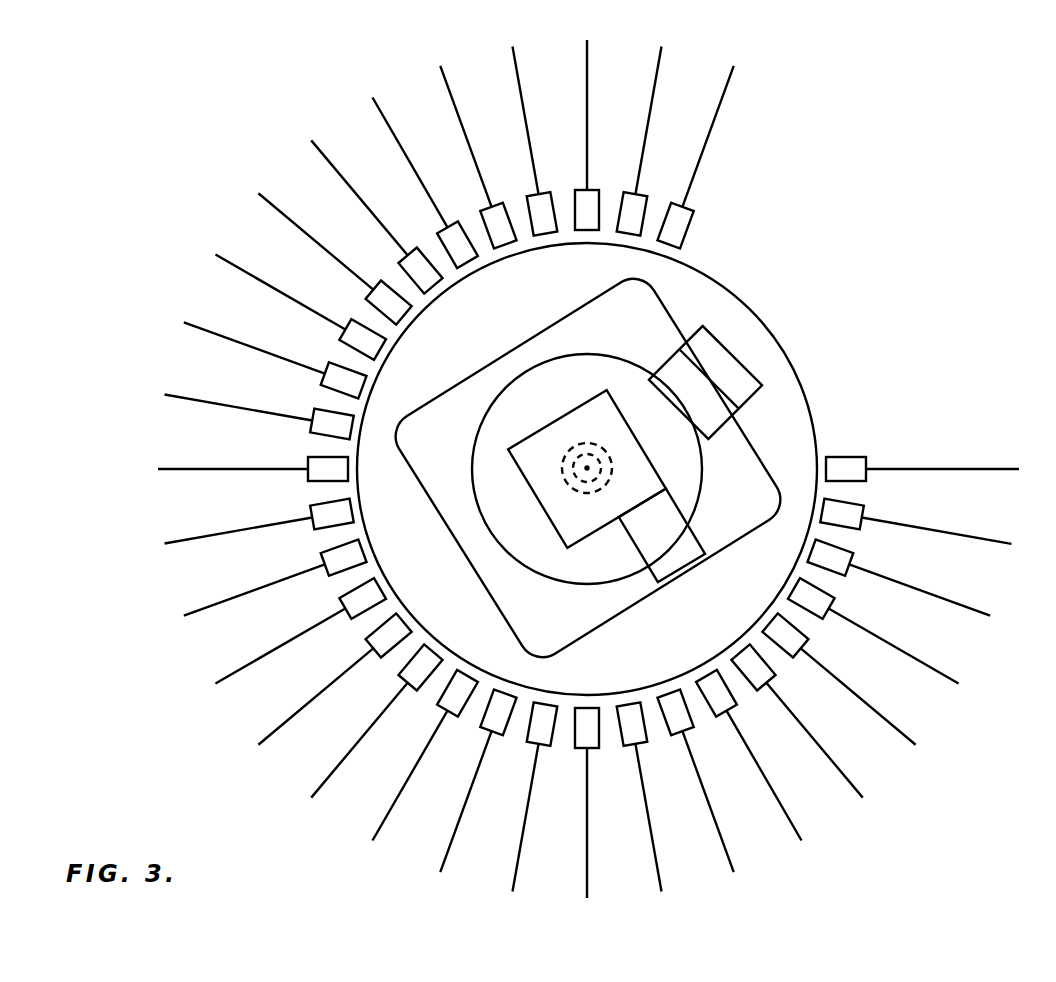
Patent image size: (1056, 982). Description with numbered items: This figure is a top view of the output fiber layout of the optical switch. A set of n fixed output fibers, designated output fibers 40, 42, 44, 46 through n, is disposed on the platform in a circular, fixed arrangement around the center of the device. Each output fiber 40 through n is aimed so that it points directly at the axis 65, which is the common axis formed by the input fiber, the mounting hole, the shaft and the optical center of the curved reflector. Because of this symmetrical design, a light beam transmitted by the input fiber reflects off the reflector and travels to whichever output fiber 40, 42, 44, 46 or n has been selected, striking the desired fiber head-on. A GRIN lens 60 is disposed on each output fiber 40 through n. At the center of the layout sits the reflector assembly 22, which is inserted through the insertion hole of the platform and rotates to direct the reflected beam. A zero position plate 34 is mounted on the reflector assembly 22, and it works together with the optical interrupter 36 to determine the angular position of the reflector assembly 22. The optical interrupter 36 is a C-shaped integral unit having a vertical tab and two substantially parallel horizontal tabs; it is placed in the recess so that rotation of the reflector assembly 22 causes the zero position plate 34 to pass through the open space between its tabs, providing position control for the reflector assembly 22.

The output fiber n is at (721, 100).
The reflector assembly 22 is at (640, 328).
The zero position plate 34 is at (678, 543).
The optical interrupter 36 is at (735, 372).
The output fiber 40 is at (948, 468).
The output fiber 42 is at (955, 528).
The output fiber 44 is at (947, 598).
The output fiber 46 is at (912, 656).
The GRIN lens 60 is at (843, 455).
The axis 65 is at (578, 456).